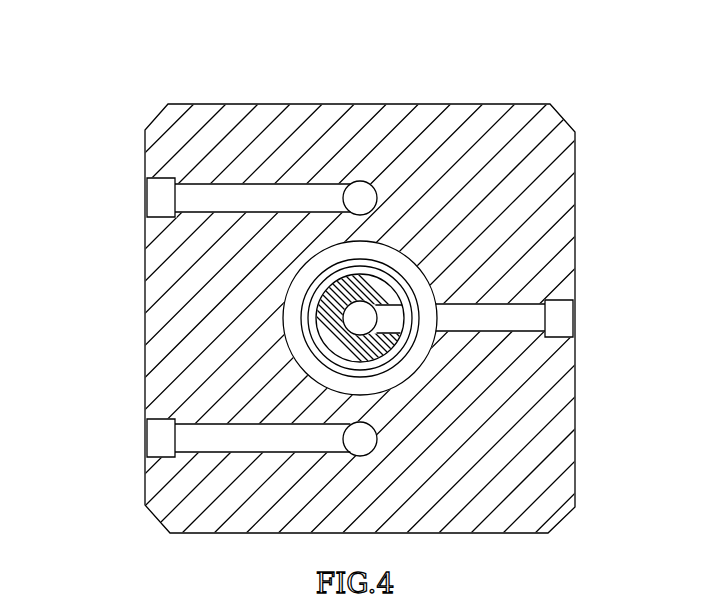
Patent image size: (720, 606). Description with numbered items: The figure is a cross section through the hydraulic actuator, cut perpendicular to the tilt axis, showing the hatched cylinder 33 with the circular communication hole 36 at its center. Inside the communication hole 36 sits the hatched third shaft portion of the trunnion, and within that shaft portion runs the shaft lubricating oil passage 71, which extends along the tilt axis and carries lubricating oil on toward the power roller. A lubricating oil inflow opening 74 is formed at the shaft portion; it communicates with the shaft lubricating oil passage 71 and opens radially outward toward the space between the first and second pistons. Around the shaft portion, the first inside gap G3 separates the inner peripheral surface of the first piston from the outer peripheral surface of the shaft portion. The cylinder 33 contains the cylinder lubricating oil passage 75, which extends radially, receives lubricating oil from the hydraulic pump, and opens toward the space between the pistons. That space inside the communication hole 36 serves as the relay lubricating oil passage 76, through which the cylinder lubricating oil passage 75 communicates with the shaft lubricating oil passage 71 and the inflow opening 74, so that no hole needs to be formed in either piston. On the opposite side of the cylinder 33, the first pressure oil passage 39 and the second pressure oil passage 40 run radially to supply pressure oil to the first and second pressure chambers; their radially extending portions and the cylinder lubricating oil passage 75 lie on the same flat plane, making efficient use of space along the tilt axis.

The cylinder 33 is at (566, 113).
The communication hole 36 is at (305, 262).
The first pressure oil passage 39 is at (188, 198).
The second pressure oil passage 40 is at (188, 441).
The shaft lubricating oil passage 71 is at (362, 310).
The lubricating oil inflow opening 74 is at (392, 314).
The cylinder lubricating oil passage 75 is at (522, 315).
The relay lubricating oil passage 76 is at (428, 315).
The first inside gap G3 is at (293, 305).